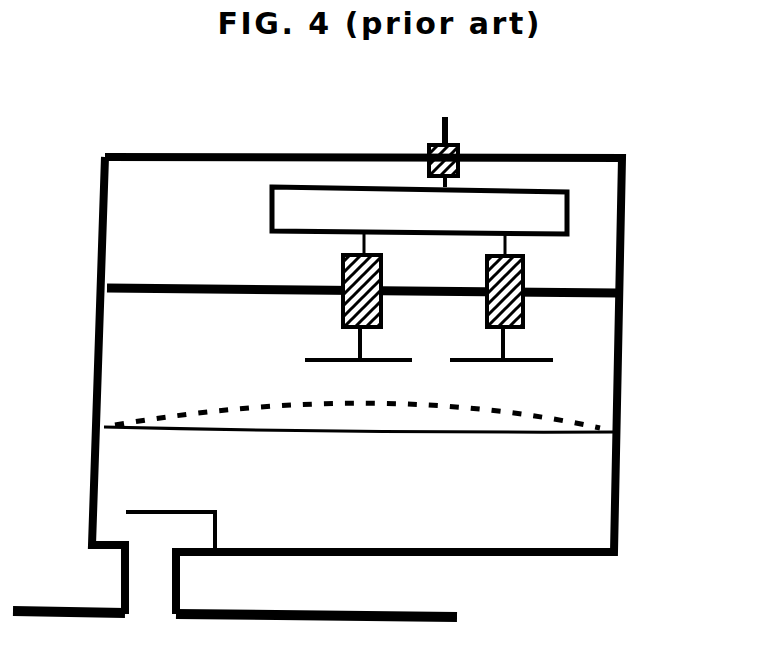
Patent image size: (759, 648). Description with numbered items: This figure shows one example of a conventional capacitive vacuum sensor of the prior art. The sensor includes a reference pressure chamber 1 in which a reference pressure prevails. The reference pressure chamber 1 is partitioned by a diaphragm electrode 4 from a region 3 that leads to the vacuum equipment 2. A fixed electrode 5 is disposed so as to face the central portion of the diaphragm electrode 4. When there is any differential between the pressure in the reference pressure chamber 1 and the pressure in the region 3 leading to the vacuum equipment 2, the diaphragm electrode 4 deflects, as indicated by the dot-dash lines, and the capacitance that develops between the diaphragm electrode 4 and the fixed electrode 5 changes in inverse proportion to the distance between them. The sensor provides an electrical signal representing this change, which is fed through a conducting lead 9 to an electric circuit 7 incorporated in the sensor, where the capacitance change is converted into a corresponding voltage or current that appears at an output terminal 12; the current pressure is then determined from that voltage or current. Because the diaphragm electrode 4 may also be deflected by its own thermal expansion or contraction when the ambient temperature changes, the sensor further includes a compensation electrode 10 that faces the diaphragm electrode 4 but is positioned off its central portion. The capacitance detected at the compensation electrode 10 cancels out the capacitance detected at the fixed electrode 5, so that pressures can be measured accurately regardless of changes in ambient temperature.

The reference pressure chamber 1 is at (588, 401).
The vacuum equipment 2 is at (55, 606).
The region leading to the vacuum equipment 3 is at (588, 507).
The diaphragm electrode 4 is at (570, 435).
The fixed electrode 5 is at (335, 358).
The electric circuit 7 is at (537, 217).
The conducting lead 9 is at (363, 241).
The compensation electrode 10 is at (530, 362).
The output terminal 12 is at (448, 133).